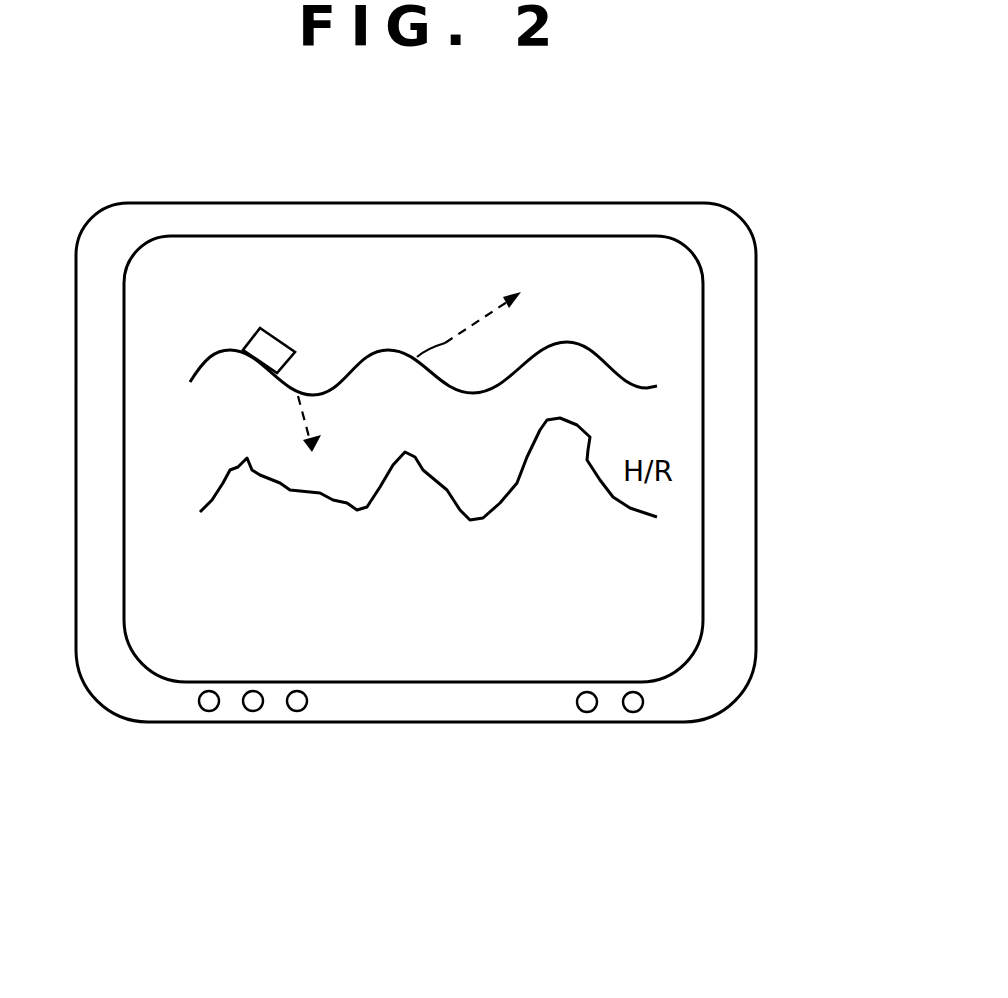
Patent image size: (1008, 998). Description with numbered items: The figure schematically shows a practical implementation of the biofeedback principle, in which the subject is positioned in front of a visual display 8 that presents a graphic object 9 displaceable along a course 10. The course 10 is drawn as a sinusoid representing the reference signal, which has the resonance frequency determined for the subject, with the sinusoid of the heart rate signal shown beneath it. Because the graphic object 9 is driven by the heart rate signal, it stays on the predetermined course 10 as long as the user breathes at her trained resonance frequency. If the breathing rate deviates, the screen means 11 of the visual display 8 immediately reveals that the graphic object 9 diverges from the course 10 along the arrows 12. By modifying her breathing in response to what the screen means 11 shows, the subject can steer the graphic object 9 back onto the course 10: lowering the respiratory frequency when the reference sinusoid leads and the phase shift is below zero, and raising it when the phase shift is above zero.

The visual display 8 is at (358, 746).
The graphic object 9 is at (270, 345).
The course 10 is at (648, 386).
The screen means 11 is at (456, 274).
The arrows 12 is at (432, 385).